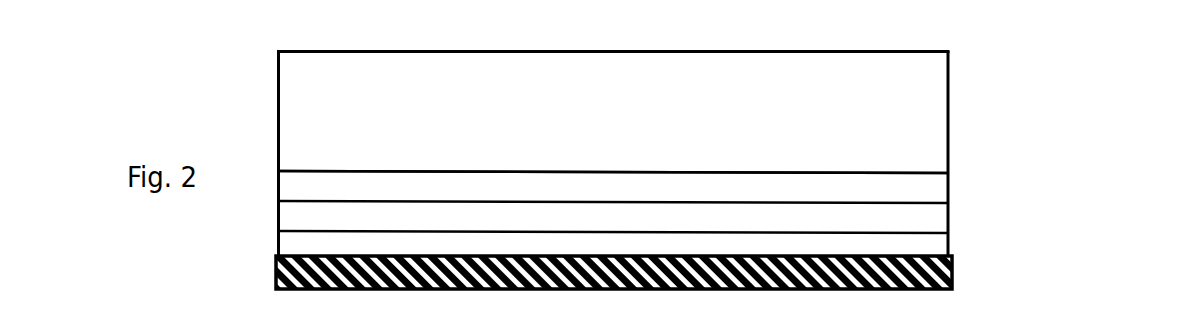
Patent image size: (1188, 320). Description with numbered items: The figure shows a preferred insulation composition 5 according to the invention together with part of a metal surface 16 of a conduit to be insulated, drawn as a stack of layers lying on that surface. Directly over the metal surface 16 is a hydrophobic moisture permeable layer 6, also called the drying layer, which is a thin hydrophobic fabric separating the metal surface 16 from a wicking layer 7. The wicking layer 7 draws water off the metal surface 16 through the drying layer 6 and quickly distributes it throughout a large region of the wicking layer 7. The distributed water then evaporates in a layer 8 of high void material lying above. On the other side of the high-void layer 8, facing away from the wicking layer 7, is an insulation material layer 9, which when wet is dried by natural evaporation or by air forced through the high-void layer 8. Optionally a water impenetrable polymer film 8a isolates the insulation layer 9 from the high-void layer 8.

The insulation composition 5 is at (970, 136).
The insulation material layer 9 is at (950, 92).
The water impenetrable polymer film 8a is at (278, 171).
The high-void layer 8 is at (887, 189).
The wicking layer 7 is at (887, 212).
The hydrophobic moisture permeable layer 6 is at (887, 242).
The metal surface 16 is at (953, 268).